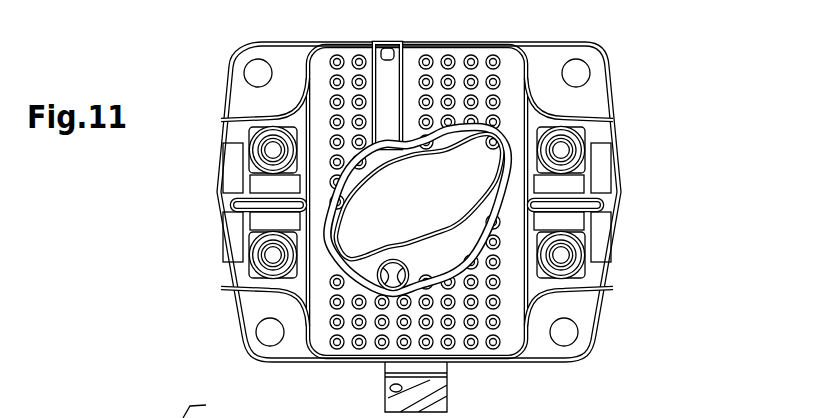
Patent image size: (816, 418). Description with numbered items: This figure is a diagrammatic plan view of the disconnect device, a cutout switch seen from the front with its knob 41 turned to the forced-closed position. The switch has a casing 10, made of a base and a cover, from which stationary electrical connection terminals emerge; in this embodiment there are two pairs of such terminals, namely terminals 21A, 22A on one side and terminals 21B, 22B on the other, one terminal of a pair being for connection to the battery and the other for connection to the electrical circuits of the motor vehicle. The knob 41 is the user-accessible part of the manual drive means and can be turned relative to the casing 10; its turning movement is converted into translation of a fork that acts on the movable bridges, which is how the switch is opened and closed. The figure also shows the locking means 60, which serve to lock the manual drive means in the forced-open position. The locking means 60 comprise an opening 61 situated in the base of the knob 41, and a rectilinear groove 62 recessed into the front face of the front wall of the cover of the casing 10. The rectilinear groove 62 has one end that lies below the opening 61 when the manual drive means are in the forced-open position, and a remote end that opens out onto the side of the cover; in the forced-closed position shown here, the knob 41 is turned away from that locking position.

The casing 10 is at (630, 204).
The stationary electrical connection terminal 21A is at (252, 138).
The stationary electrical connection terminal 21B is at (580, 136).
The stationary electrical connection terminal 22A is at (250, 268).
The stationary electrical connection terminal 22B is at (585, 260).
The knob 41 is at (576, 172).
The locking means 60 is at (315, 146).
The opening 61 is at (372, 92).
The rectilinear groove 62 is at (390, 262).